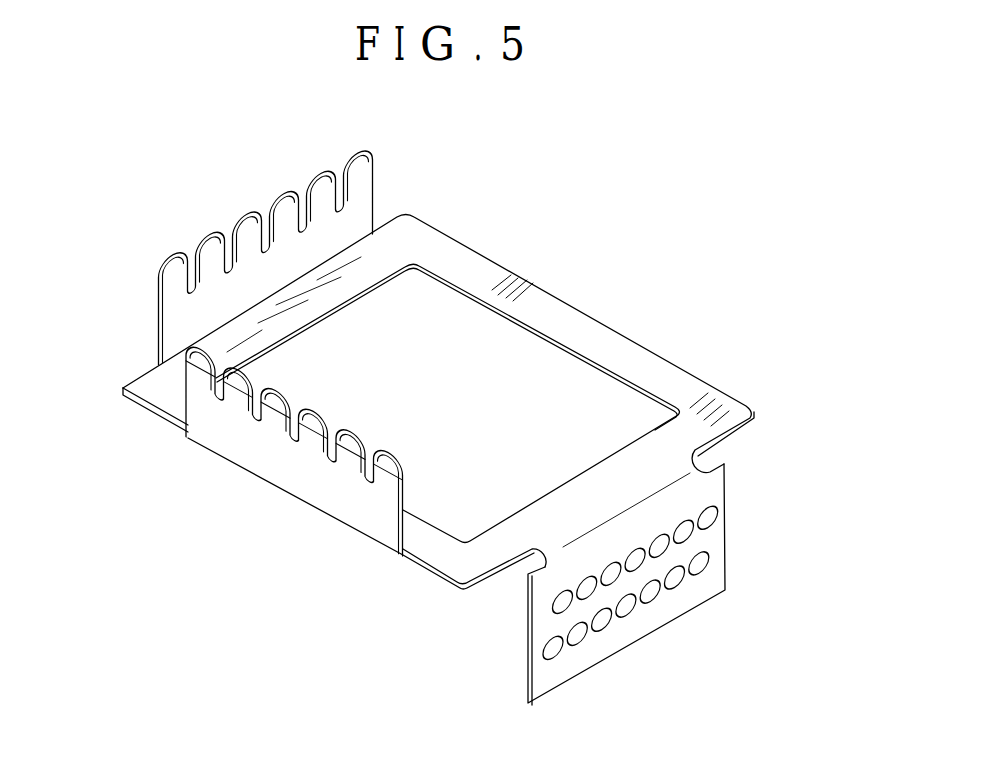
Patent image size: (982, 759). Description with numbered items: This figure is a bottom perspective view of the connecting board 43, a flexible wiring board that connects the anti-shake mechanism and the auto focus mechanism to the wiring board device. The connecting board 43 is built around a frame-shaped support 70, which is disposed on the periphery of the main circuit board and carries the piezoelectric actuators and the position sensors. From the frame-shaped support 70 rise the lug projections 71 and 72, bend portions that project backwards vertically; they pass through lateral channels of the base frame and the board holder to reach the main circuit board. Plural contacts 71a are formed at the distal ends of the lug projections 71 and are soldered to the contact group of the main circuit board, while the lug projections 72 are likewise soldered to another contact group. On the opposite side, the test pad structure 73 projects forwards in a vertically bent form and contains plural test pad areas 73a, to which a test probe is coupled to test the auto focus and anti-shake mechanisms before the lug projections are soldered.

The connecting board 43 is at (632, 332).
The frame-shaped support 70 is at (487, 277).
The lug projections 71 is at (275, 462).
The contacts 71a is at (347, 446).
The lug projections 72 is at (180, 314).
The test pad structure 73 is at (613, 640).
The test pad areas 73a is at (703, 562).